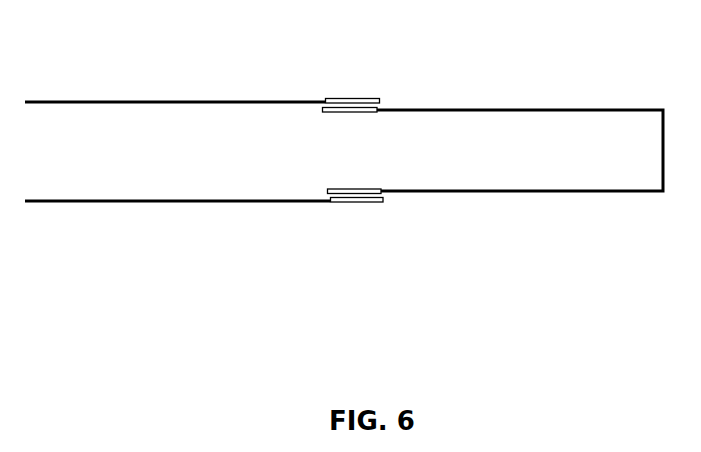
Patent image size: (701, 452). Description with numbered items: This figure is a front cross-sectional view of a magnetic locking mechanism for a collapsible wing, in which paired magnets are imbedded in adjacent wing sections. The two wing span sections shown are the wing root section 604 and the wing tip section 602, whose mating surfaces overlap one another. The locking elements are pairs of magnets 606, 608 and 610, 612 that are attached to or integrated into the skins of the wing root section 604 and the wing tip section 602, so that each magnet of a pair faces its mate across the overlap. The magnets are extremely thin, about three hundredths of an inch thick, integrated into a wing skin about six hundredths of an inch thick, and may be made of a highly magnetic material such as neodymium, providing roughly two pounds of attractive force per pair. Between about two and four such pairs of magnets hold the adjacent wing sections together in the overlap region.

The wing tip section 602 is at (523, 178).
The wing root section 604 is at (135, 203).
The magnet 606 is at (358, 203).
The magnet 608 is at (388, 193).
The magnet 610 is at (333, 110).
The magnet 612 is at (367, 102).